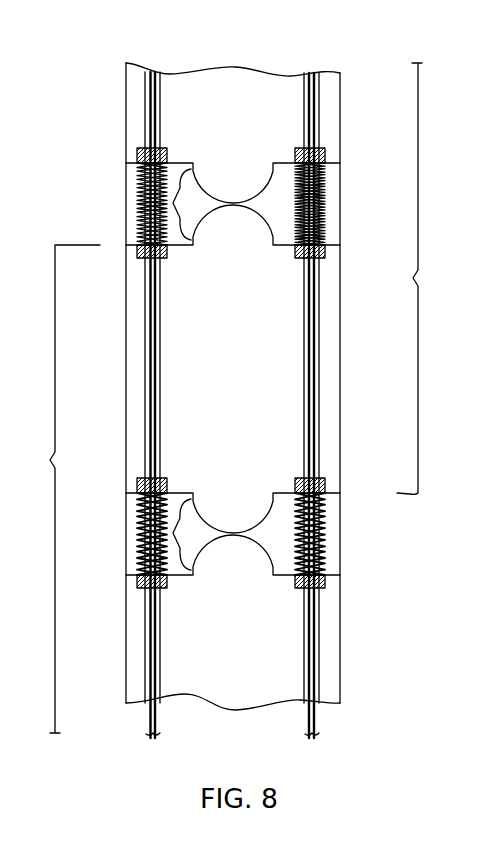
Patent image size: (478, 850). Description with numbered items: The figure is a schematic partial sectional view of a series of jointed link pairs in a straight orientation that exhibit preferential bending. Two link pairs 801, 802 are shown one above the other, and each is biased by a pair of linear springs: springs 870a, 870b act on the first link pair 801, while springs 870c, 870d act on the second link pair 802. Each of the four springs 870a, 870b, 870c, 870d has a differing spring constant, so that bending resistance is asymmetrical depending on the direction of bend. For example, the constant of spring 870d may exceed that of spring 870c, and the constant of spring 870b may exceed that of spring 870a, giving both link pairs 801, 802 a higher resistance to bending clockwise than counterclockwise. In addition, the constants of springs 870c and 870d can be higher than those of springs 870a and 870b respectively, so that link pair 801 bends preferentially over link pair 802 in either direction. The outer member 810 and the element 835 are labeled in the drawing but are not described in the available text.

The outer housing / tube 810 is at (233, 68).
The shaft / push rod 835 is at (150, 100).
The linear spring 870a is at (140, 208).
The linear spring 870b is at (325, 208).
The linear spring 870c is at (140, 531).
The linear spring 870d is at (326, 548).
The link pair 801 is at (419, 279).
The link pair 802 is at (50, 460).